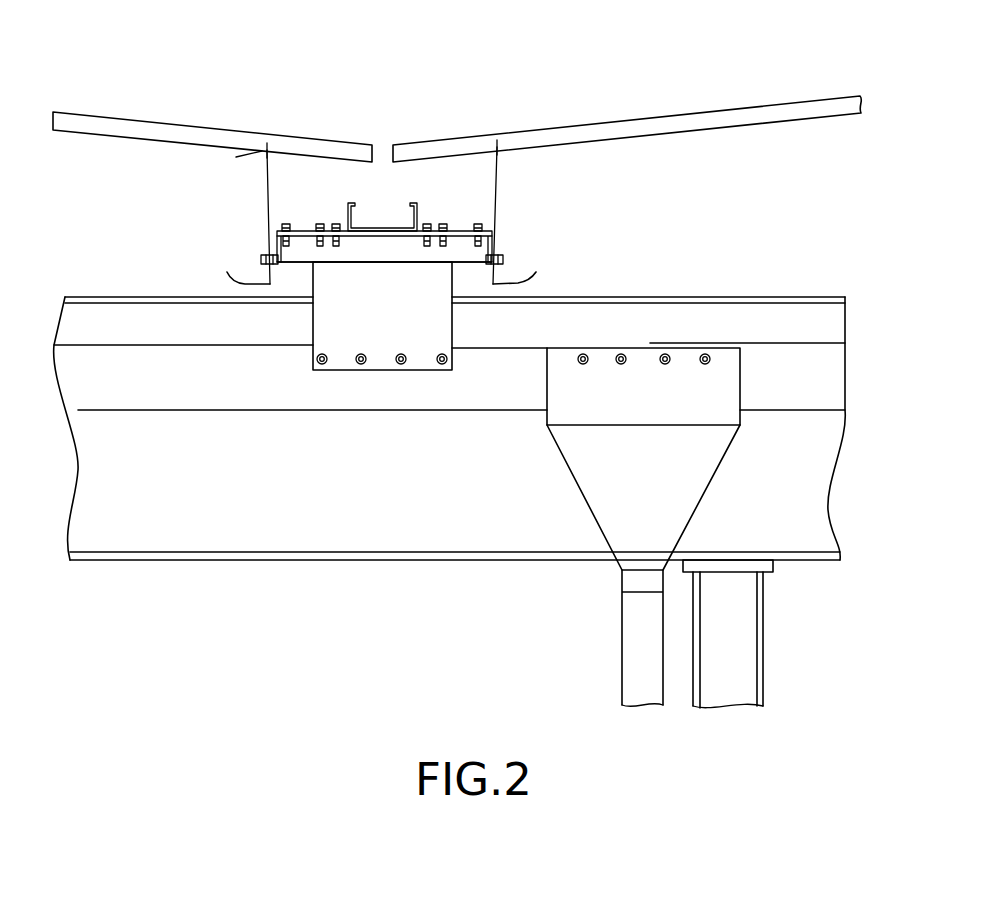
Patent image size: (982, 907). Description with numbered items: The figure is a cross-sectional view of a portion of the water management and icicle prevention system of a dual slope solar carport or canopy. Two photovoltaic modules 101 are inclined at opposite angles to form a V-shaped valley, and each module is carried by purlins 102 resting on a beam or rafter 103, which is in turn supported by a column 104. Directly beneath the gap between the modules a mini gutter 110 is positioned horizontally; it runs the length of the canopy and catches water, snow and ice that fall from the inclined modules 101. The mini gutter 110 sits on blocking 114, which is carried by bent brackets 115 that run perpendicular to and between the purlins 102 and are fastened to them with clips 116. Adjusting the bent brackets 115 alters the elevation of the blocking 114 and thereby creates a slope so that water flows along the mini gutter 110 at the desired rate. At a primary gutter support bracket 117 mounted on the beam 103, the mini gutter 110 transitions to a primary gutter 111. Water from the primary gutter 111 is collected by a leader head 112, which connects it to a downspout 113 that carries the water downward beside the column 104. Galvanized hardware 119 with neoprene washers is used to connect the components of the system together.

The photovoltaic module 101 is at (563, 124).
The purlin 102 is at (527, 155).
The beam or rafter 103 is at (298, 500).
The column 104 is at (740, 607).
The mini gutter 110 is at (380, 225).
The primary gutter 111 is at (486, 400).
The leader head 112 is at (567, 477).
The downspout 113 is at (618, 636).
The blocking 114 is at (292, 264).
The bent bracket 115 is at (498, 233).
The clip 116 is at (342, 198).
The primary gutter support bracket 117 is at (368, 382).
The galvanized hardware 119 is at (272, 226).